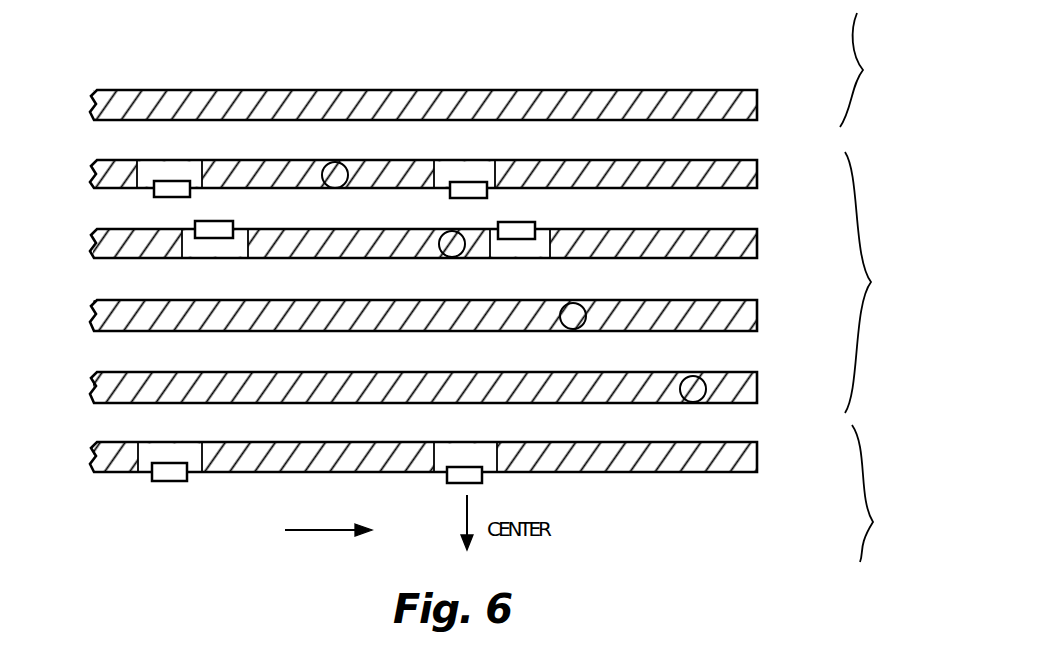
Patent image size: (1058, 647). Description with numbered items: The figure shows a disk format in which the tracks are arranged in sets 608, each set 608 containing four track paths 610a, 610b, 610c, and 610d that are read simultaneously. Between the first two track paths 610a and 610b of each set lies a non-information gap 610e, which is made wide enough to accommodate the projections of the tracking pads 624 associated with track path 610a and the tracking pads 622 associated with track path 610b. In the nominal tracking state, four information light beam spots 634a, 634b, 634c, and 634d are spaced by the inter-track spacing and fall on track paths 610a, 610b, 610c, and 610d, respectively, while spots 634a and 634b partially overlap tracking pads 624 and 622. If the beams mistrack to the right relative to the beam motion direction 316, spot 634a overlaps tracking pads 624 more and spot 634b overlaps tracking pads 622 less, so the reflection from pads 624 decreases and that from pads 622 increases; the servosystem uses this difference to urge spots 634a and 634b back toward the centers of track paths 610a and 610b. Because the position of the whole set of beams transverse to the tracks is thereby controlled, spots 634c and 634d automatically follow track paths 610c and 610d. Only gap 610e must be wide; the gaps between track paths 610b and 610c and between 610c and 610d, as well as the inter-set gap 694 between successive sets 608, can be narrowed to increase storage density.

The track path 610a is at (757, 175).
The track path 610b is at (757, 245).
The track path 610c is at (757, 316).
The track path 610d is at (757, 105).
The non-information gap 610e is at (110, 211).
The inter-set gap 694 is at (104, 141).
The tracking pads 624 is at (173, 201).
The tracking pads 622 is at (221, 223).
The information light beam spot 634a is at (343, 163).
The information light beam spot 634b is at (450, 258).
The information light beam spot 634c is at (584, 303).
The information light beam spot 634d is at (702, 373).
The beam motion direction 316 is at (334, 528).
The set 608 is at (881, 287).